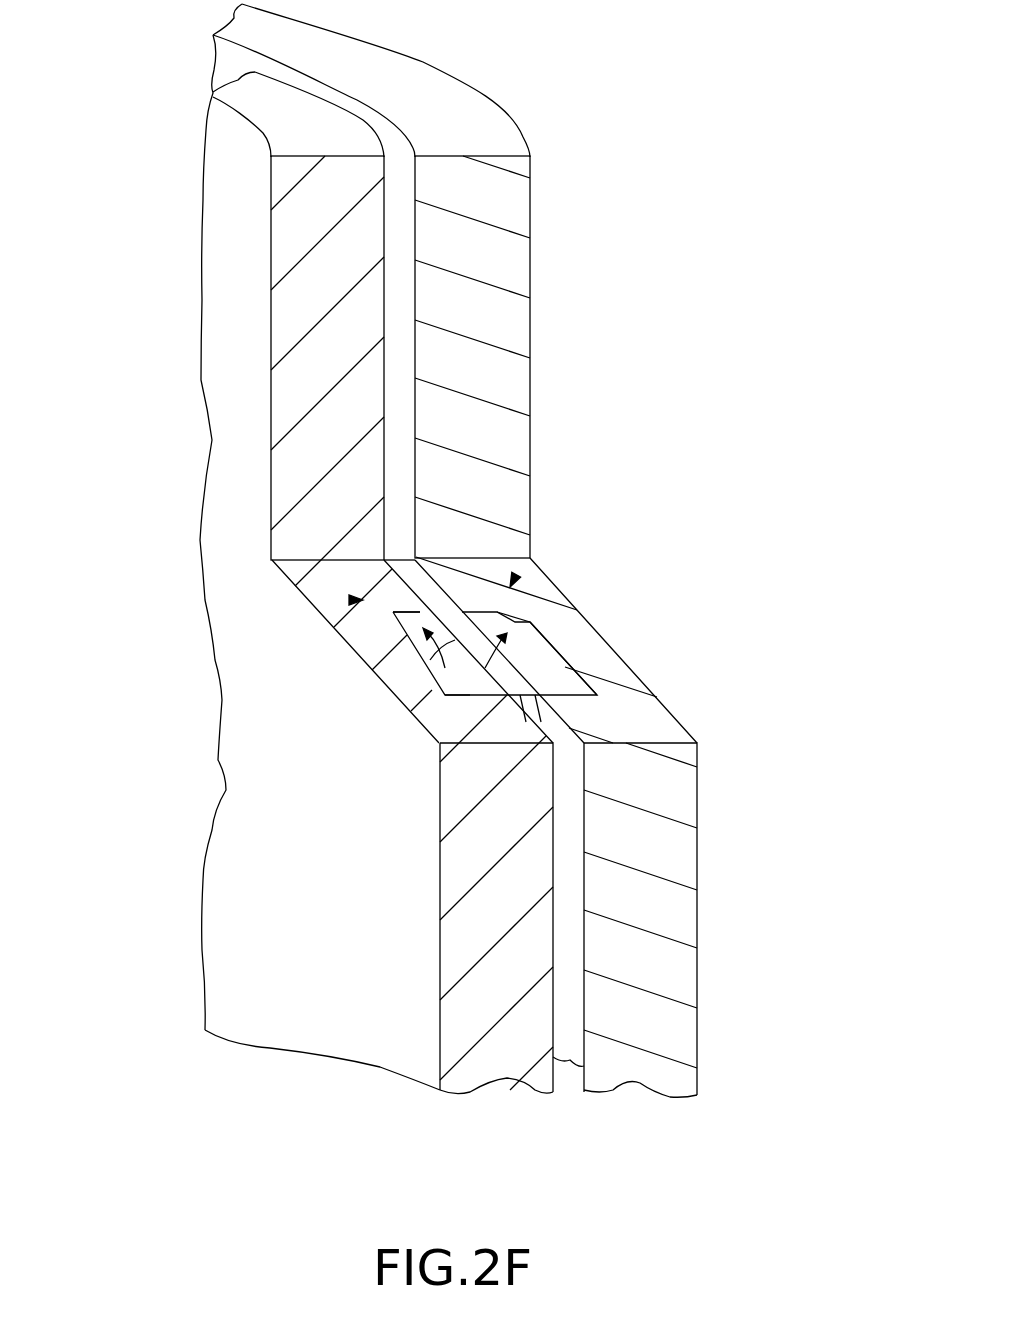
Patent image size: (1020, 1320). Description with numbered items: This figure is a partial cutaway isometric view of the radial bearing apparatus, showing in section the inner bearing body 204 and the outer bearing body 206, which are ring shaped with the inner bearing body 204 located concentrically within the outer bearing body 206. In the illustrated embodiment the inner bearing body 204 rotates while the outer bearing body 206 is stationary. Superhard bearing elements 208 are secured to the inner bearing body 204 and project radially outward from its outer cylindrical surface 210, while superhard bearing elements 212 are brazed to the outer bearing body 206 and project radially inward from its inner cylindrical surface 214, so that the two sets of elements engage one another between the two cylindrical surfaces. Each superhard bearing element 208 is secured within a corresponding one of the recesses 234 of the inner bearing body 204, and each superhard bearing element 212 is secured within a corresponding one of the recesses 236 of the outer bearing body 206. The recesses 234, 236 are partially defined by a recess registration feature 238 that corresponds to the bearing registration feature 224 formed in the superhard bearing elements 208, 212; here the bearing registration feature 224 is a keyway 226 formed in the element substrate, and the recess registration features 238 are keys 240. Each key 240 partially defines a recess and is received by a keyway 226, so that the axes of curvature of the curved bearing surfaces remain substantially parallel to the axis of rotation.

The inner bearing body 204 is at (288, 402).
The outer bearing body 206 is at (495, 343).
The superhard bearing elements 208 is at (385, 640).
The outer cylindrical surface 210 is at (553, 1020).
The superhard bearing elements 212 is at (535, 653).
The inner cylindrical surface 214 is at (584, 892).
The bearing registration feature 224 is at (412, 650).
The keyway 226 is at (400, 670).
The recesses 234 is at (437, 712).
The recesses 236 is at (583, 688).
The recess registration feature 238 is at (349, 600).
The keys 240 is at (385, 620).